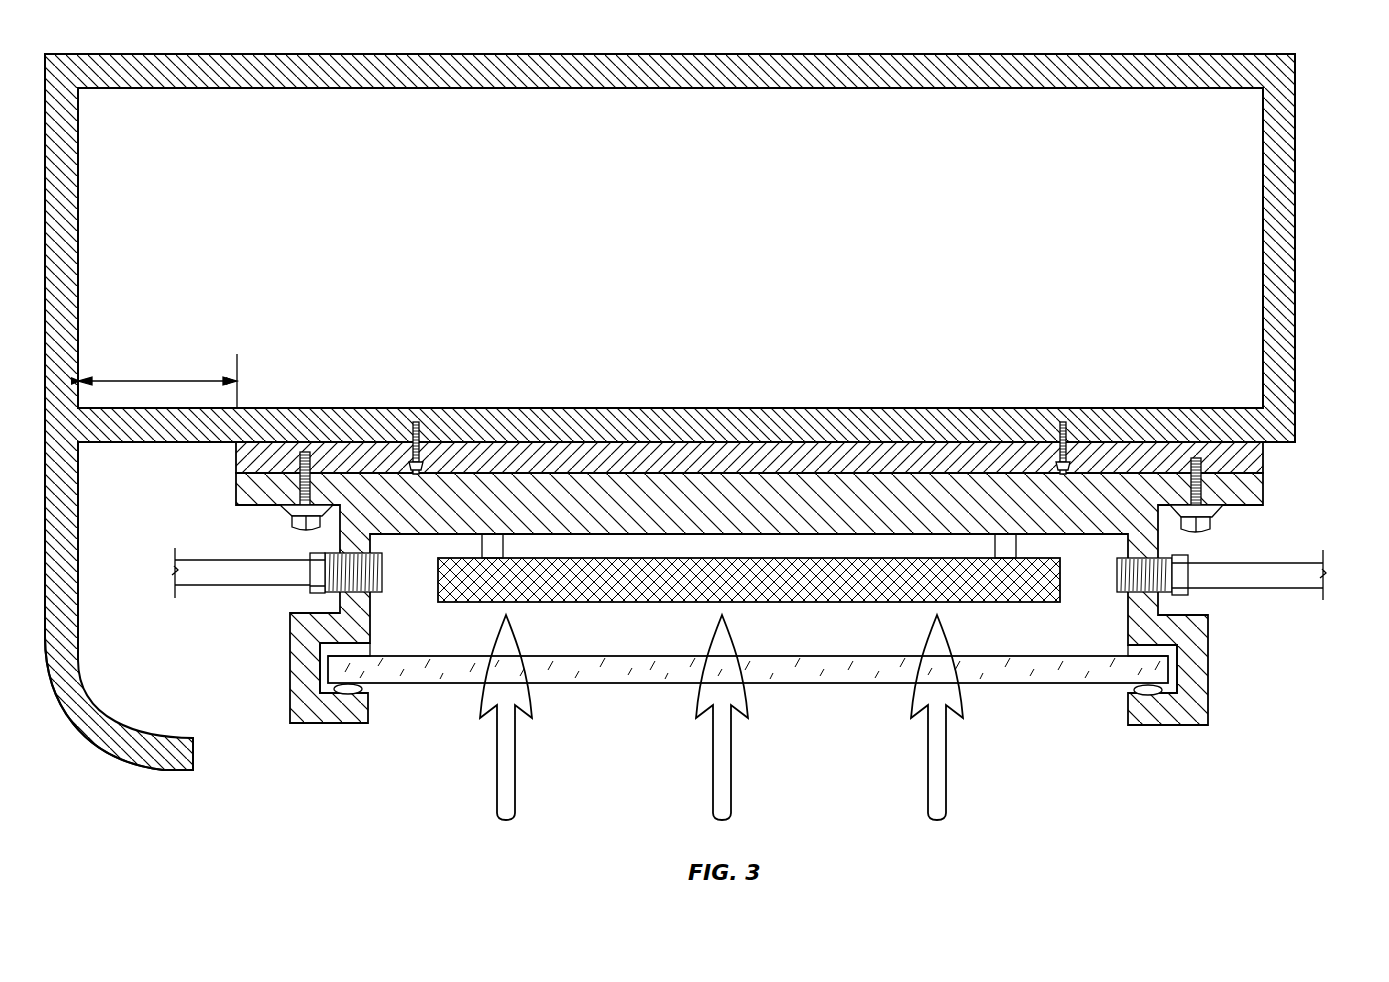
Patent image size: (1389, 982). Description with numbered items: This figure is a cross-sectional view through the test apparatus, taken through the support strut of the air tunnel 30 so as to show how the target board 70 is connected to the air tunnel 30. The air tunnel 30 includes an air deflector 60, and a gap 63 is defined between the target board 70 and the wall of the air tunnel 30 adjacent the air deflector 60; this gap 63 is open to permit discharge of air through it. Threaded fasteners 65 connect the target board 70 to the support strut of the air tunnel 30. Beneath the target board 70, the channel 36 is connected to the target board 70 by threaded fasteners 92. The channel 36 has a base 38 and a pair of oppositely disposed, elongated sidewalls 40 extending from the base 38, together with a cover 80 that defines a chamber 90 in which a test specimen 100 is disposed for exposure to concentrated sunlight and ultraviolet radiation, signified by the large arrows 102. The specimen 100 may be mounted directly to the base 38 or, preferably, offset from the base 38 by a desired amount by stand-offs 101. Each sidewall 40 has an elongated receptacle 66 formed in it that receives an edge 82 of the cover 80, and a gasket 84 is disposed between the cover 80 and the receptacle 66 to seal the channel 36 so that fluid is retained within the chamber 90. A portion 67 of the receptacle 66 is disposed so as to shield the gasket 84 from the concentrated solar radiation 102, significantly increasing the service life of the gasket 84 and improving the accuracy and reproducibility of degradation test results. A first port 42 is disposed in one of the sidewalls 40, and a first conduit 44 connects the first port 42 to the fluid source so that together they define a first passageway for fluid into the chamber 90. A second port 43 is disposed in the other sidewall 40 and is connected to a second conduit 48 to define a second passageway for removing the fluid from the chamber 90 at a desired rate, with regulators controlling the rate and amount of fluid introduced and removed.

The air tunnel 30 is at (1311, 164).
The channel 36 is at (305, 779).
The base 38 is at (1250, 502).
The sidewall 40 is at (302, 636).
The first port 42 is at (1168, 594).
The second port 43 is at (313, 556).
The first conduit 44 is at (1258, 566).
The second conduit 48 is at (230, 580).
The air deflector 60 is at (165, 772).
The gap 63 is at (147, 381).
The threaded fasteners 65 is at (417, 425).
The elongated receptacle 66 is at (372, 646).
The portion of the receptacle 67 is at (369, 701).
The target board 70 is at (1266, 445).
The cover 80 is at (1095, 684).
The edge of the cover 82 is at (328, 672).
The gasket 84 is at (348, 696).
The chamber 90 is at (803, 630).
The threaded fasteners 92 is at (292, 522).
The test specimen 100 is at (1060, 590).
The stand-offs 101 is at (492, 545).
The concentrated solar radiation arrows 102 is at (507, 821).